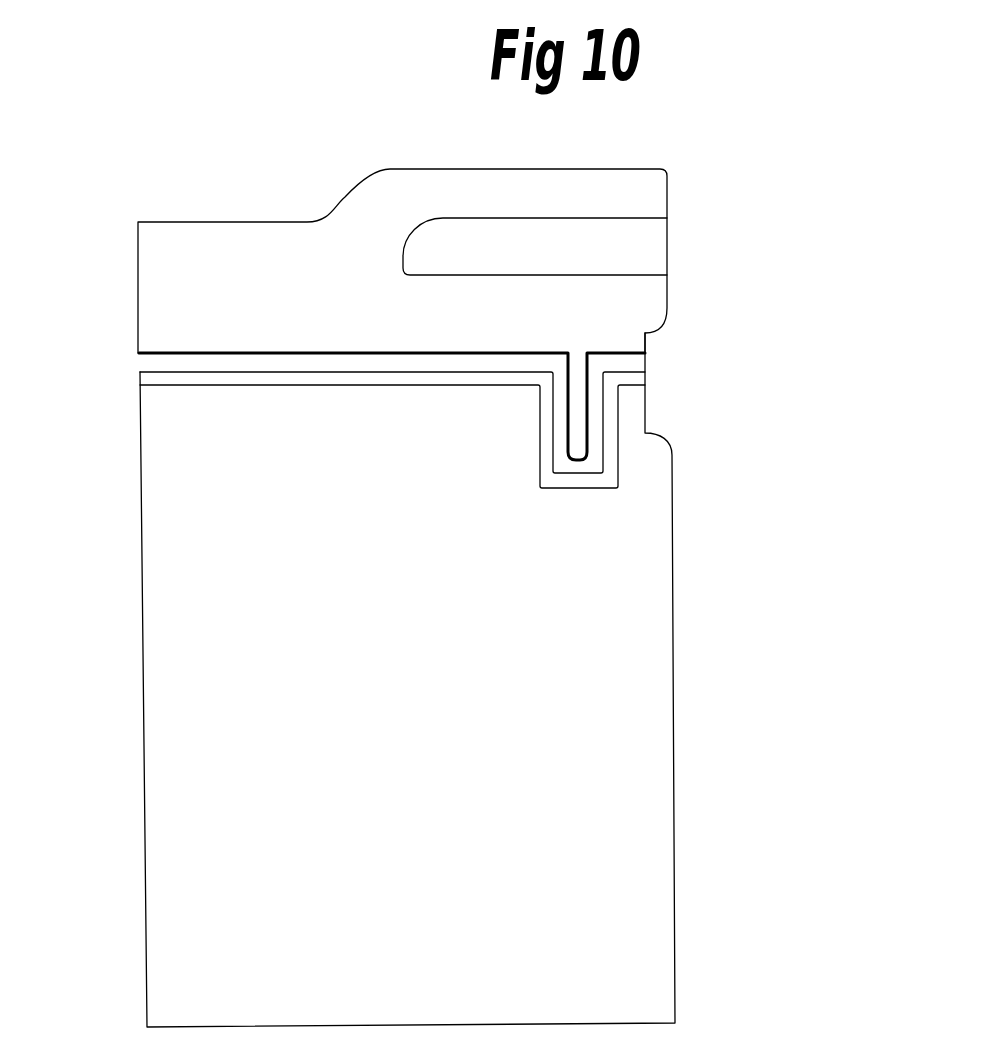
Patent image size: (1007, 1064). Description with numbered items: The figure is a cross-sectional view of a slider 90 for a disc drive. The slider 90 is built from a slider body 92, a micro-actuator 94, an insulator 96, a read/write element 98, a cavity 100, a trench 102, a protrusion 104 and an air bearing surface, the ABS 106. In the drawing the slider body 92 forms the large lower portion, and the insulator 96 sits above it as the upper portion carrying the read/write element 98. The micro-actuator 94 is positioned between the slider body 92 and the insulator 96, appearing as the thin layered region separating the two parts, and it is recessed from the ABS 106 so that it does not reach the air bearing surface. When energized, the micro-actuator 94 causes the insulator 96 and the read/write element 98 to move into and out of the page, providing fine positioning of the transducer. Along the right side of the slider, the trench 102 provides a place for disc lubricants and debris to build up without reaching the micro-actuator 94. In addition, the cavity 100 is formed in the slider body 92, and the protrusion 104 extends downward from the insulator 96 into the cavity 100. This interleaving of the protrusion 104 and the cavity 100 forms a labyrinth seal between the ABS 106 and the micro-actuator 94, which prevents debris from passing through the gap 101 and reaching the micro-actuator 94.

The slider 90 is at (168, 127).
The slider body 92 is at (158, 656).
The micro-actuator 94 is at (267, 372).
The insulator 96 is at (660, 192).
The read/write element 98 is at (657, 257).
The cavity 100 is at (565, 465).
The gap 101 is at (643, 362).
The trench 102 is at (655, 410).
The protrusion 104 is at (580, 450).
The ABS 106 is at (672, 528).